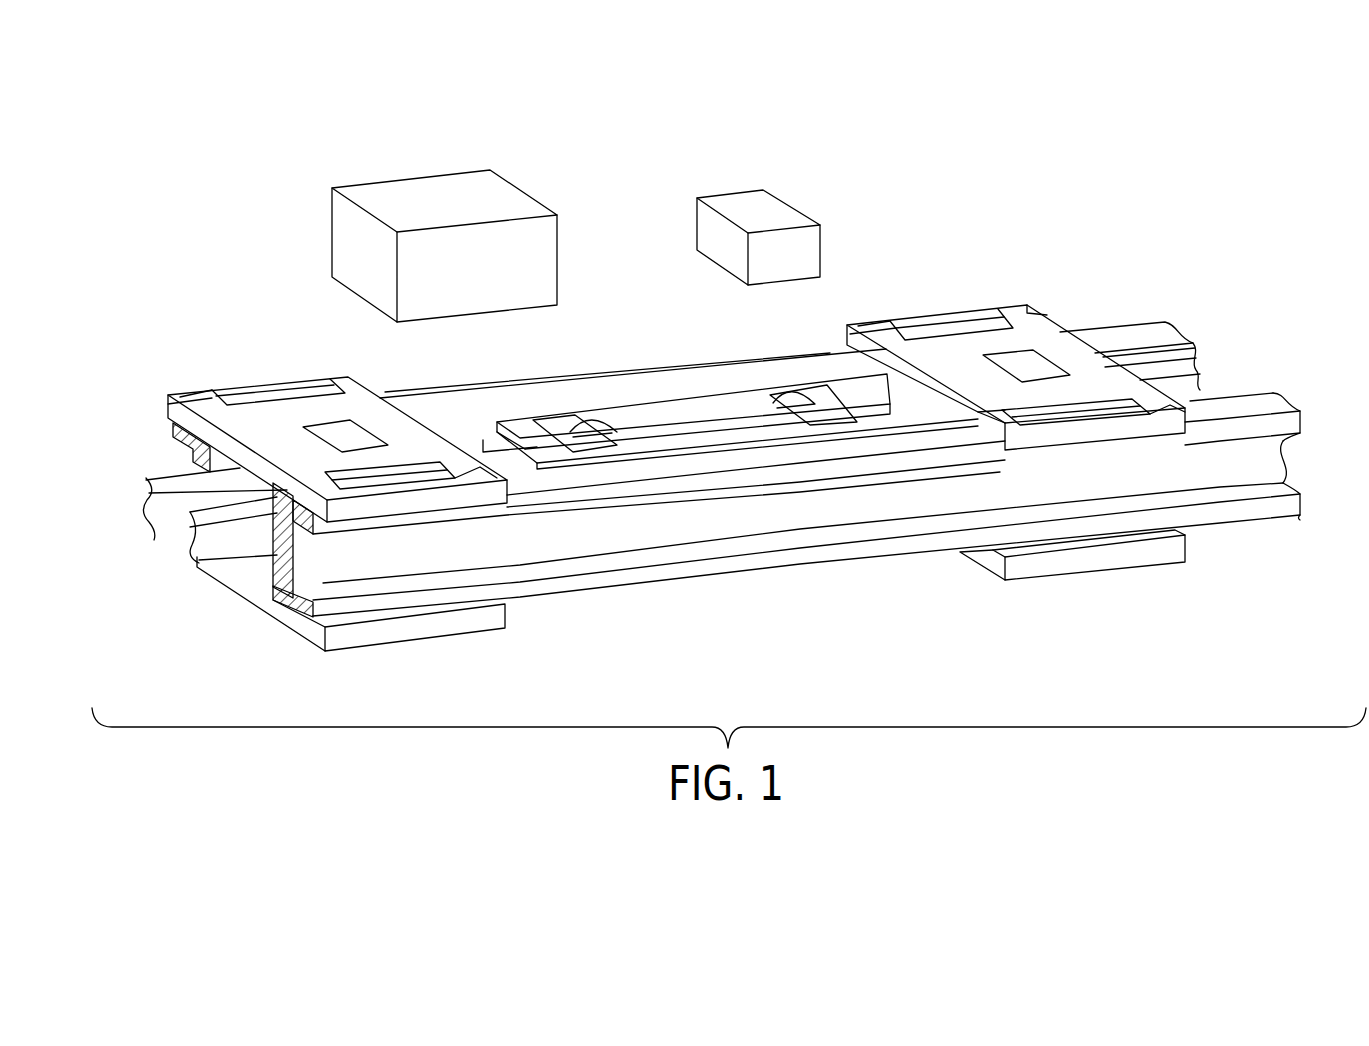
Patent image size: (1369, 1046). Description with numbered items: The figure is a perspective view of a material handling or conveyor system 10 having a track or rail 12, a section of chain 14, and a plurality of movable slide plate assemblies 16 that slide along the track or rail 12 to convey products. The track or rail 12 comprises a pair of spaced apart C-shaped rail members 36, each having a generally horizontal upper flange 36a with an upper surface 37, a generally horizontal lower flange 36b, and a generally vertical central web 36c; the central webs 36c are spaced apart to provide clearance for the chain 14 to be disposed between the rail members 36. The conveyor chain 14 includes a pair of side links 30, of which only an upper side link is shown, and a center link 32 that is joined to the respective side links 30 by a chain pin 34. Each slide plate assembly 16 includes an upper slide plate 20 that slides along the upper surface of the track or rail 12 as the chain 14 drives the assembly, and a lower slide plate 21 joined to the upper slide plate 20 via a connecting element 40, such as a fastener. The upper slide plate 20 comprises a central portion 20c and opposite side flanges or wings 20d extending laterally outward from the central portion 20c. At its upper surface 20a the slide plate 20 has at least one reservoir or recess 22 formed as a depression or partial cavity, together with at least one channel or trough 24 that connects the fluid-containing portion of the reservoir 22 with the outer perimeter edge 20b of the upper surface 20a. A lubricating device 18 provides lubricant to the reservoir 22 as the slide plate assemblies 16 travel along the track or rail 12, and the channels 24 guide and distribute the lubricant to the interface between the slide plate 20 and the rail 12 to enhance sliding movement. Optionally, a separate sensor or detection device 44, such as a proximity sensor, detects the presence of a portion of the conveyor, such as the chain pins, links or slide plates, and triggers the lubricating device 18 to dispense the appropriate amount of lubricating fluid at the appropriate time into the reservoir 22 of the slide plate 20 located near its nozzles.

The conveyor system 10 is at (980, 139).
The track or rail 12 is at (744, 510).
The chain 14 is at (580, 465).
The slide plate assembly 16 is at (644, 396).
The lubricating device 18 is at (420, 196).
The upper slide plate 20 is at (644, 414).
The upper surface of the slide plate 20a is at (1060, 350).
The outer perimeter edge of the upper surface 20b is at (616, 357).
The central portion 20c is at (172, 517).
The side flange or wing 20d is at (629, 316).
The lower slide plate 21 is at (355, 652).
The reservoir or recess 22 is at (270, 393).
The channel or trough 24 is at (205, 395).
The side link 30 is at (687, 410).
The center link 32 is at (487, 440).
The chain pin 34 is at (805, 400).
The rail member 36 is at (759, 481).
The upper flange 36a is at (1292, 405).
The lower flange 36b is at (1277, 518).
The central web 36c is at (1272, 468).
The upper surface 37 is at (738, 375).
The connecting element 40 is at (330, 437).
The sensor or detection device 44 is at (757, 212).